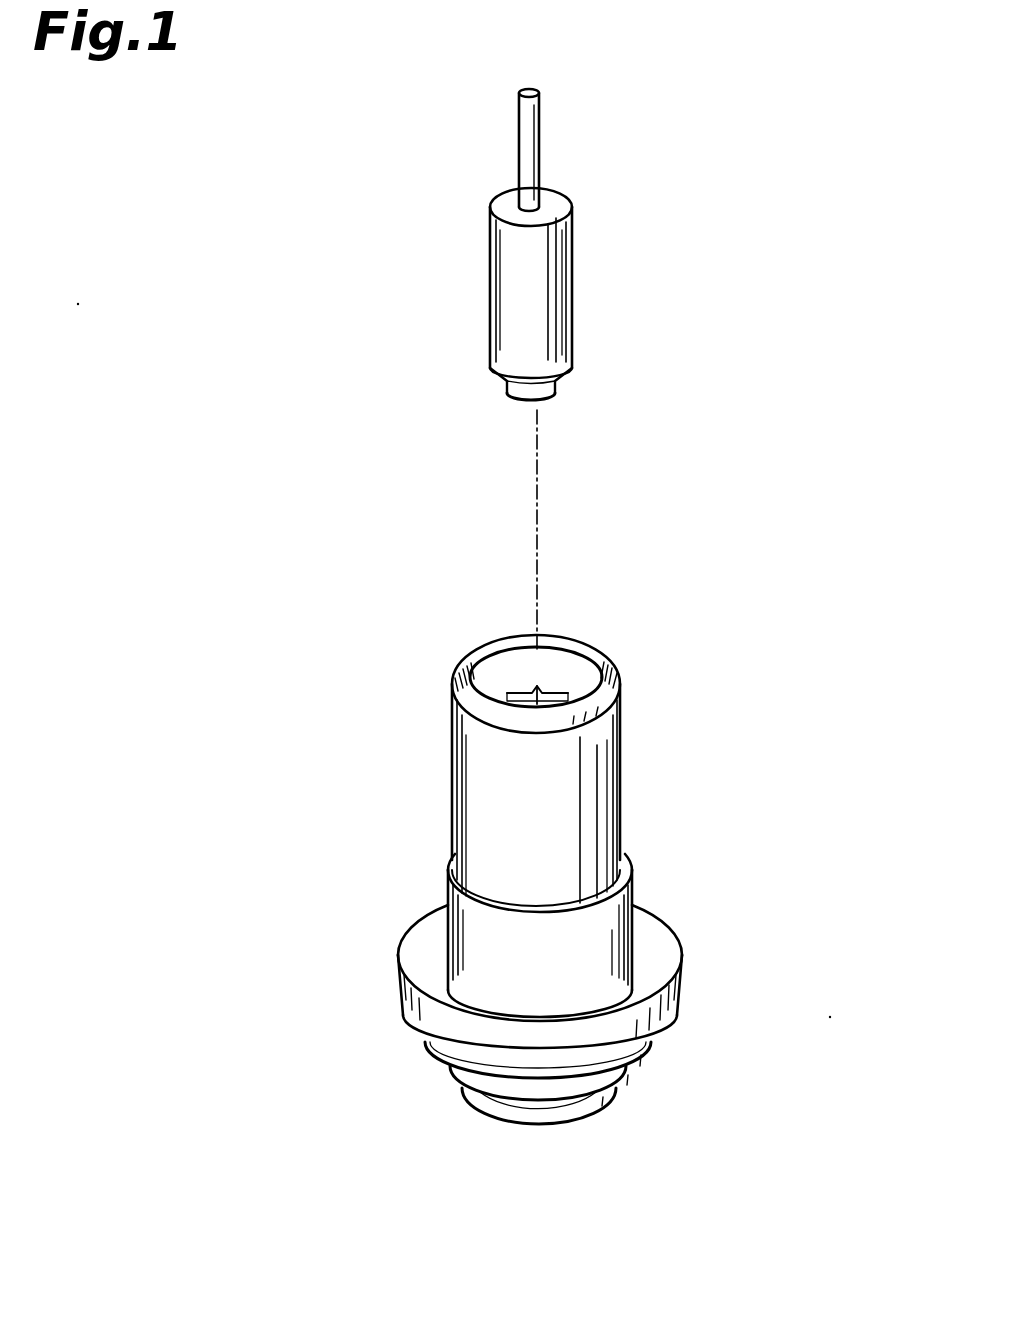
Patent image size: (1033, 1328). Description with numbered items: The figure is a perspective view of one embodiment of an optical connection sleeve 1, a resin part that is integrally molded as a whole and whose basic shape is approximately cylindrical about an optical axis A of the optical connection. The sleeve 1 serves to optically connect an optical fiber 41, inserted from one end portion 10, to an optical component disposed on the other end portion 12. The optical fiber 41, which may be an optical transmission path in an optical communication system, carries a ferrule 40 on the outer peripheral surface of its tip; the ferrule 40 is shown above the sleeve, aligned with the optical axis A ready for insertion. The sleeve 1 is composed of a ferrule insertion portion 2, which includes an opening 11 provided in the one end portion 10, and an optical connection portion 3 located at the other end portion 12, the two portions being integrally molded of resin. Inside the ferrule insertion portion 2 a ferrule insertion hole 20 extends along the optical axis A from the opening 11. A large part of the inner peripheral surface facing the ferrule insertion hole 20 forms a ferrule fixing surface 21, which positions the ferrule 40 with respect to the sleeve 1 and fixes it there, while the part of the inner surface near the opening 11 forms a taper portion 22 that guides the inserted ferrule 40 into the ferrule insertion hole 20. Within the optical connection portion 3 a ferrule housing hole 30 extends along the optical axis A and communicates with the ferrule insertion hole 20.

The optical connection sleeve 1 is at (587, 885).
The ferrule insertion portion 2 is at (568, 720).
The optical connection portion 3 is at (563, 1043).
The one end portion 10 is at (459, 642).
The opening 11 is at (431, 694).
The other end portion 12 is at (408, 1066).
The ferrule insertion hole 20 is at (557, 663).
The ferrule fixing surface 21 is at (620, 657).
The taper portion 22 is at (496, 678).
The ferrule housing hole 30 is at (565, 1122).
The ferrule 40 is at (560, 290).
The optical fiber 41 is at (530, 152).
The optical axis A is at (541, 498).